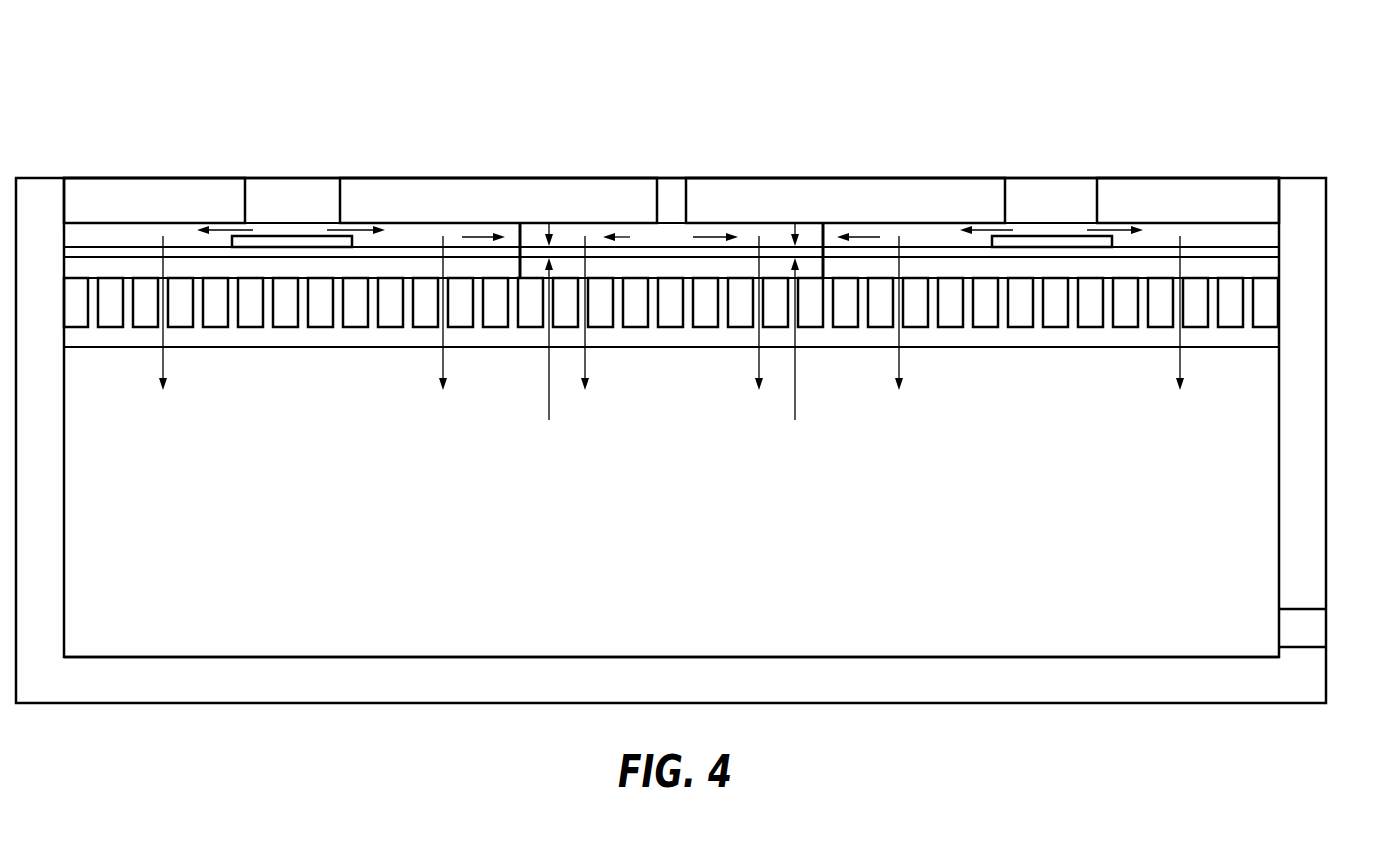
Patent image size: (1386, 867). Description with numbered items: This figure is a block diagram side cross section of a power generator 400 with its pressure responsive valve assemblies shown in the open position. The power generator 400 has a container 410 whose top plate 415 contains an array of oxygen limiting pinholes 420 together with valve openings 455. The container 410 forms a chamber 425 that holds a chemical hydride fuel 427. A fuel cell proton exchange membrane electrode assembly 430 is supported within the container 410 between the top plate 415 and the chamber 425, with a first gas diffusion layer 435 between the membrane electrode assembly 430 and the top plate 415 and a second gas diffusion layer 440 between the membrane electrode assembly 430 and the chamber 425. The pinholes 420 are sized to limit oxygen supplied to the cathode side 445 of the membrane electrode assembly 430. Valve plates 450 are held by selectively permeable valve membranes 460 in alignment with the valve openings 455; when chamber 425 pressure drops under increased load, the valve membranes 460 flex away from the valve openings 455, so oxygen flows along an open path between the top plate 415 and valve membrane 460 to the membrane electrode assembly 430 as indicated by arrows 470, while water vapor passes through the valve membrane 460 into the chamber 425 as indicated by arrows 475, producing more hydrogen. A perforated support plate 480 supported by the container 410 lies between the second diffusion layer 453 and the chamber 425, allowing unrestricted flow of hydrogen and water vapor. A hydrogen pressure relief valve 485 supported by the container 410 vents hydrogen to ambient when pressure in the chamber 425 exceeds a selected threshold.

The power generator 400 is at (1234, 118).
The container 410 is at (1328, 443).
The top plate 415 is at (500, 178).
The oxygen limiting pinholes 420 is at (672, 188).
The chamber 425 is at (65, 510).
The chemical hydride fuel 427 is at (1025, 622).
The fuel cell proton exchange membrane electrode assembly 430 is at (532, 232).
The first gas diffusion layer 435 is at (813, 229).
The second gas diffusion layer 440 is at (860, 257).
The cathode side 445 is at (660, 246).
The valve plates 450 is at (293, 234).
The second diffusion layer 453 is at (537, 268).
The valve openings 455 is at (270, 188).
The valve membranes 460 is at (1239, 245).
The arrows 470 is at (948, 257).
The arrows 475 is at (1181, 367).
The perforated support plate 480 is at (1056, 311).
The hydrogen pressure relief valve 485 is at (1302, 608).